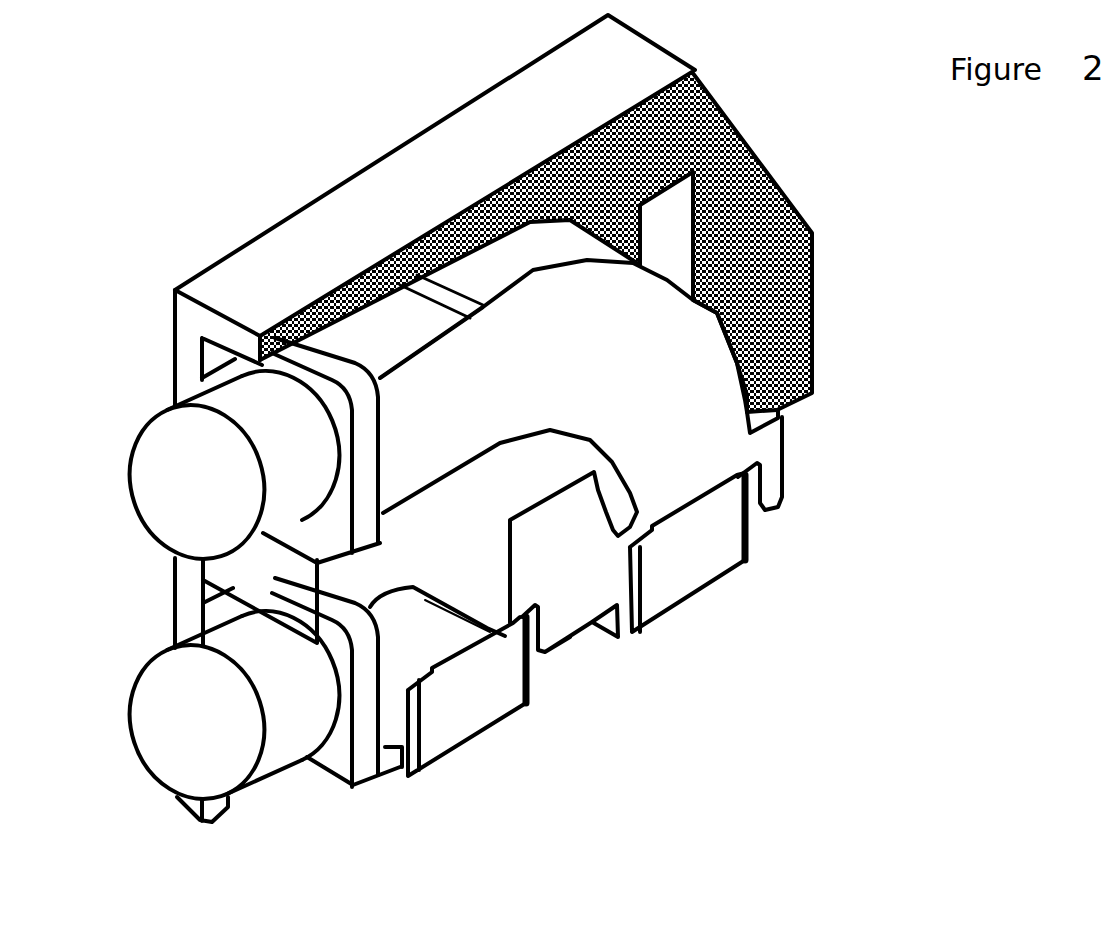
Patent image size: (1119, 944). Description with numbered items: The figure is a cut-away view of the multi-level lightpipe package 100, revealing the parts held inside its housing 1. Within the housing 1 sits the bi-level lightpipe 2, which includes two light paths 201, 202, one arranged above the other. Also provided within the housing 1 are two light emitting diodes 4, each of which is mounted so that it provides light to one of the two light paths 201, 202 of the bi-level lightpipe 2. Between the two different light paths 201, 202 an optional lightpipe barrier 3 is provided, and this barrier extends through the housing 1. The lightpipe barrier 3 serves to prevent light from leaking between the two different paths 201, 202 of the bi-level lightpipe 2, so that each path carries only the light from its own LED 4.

The housing 1 is at (527, 132).
The bi-level lightpipe 2 is at (890, 382).
The lightpipe barrier 3 is at (443, 567).
The light emitting diodes 4 is at (460, 713).
The multi-level lightpipe package 100 is at (822, 198).
The light path 201 is at (296, 375).
The light path 202 is at (258, 748).